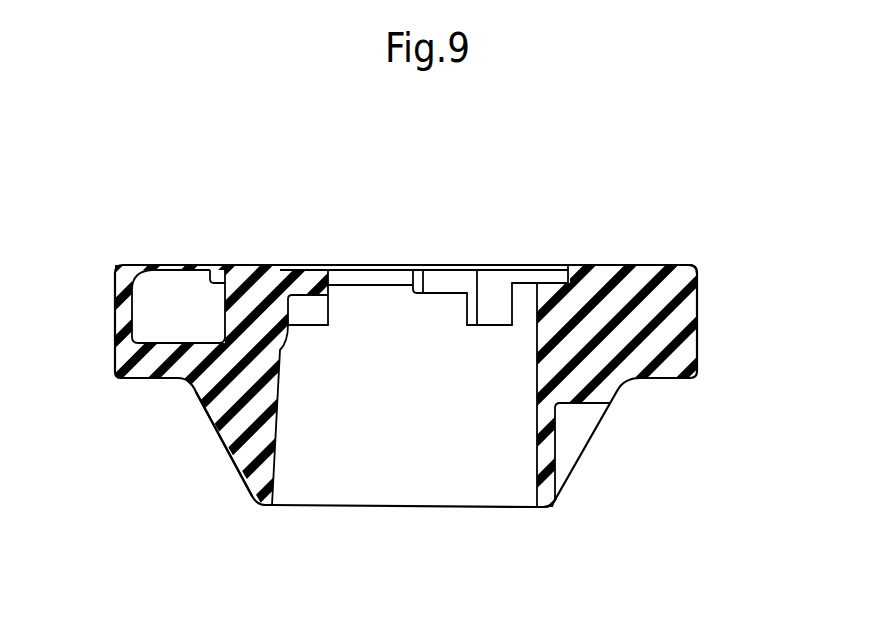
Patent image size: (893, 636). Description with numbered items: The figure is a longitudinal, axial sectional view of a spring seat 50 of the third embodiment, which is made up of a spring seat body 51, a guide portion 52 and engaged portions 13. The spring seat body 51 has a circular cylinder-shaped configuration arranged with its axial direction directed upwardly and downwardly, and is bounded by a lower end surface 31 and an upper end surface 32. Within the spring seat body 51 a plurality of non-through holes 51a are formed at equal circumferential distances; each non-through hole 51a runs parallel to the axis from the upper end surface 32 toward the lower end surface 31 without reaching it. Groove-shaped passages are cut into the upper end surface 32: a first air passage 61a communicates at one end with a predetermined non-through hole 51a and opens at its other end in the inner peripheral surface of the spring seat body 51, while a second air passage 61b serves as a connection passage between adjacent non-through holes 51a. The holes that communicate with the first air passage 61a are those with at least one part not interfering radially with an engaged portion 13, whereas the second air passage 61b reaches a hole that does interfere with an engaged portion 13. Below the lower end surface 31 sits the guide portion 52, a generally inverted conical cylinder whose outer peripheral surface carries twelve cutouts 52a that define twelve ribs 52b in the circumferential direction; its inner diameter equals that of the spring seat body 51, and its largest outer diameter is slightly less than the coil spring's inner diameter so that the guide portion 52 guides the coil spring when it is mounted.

The spring seat 50 is at (680, 188).
The spring seat body 51 is at (685, 323).
The non-through hole 51a is at (152, 275).
The guide portion 52 is at (555, 470).
The cutout 52a is at (577, 438).
The rib 52b is at (230, 458).
The first air passage 61a is at (553, 278).
The second air passage 61b is at (217, 276).
The engaged portion 13 is at (316, 279).
The lower end surface 31 is at (150, 378).
The upper end surface 32 is at (668, 267).